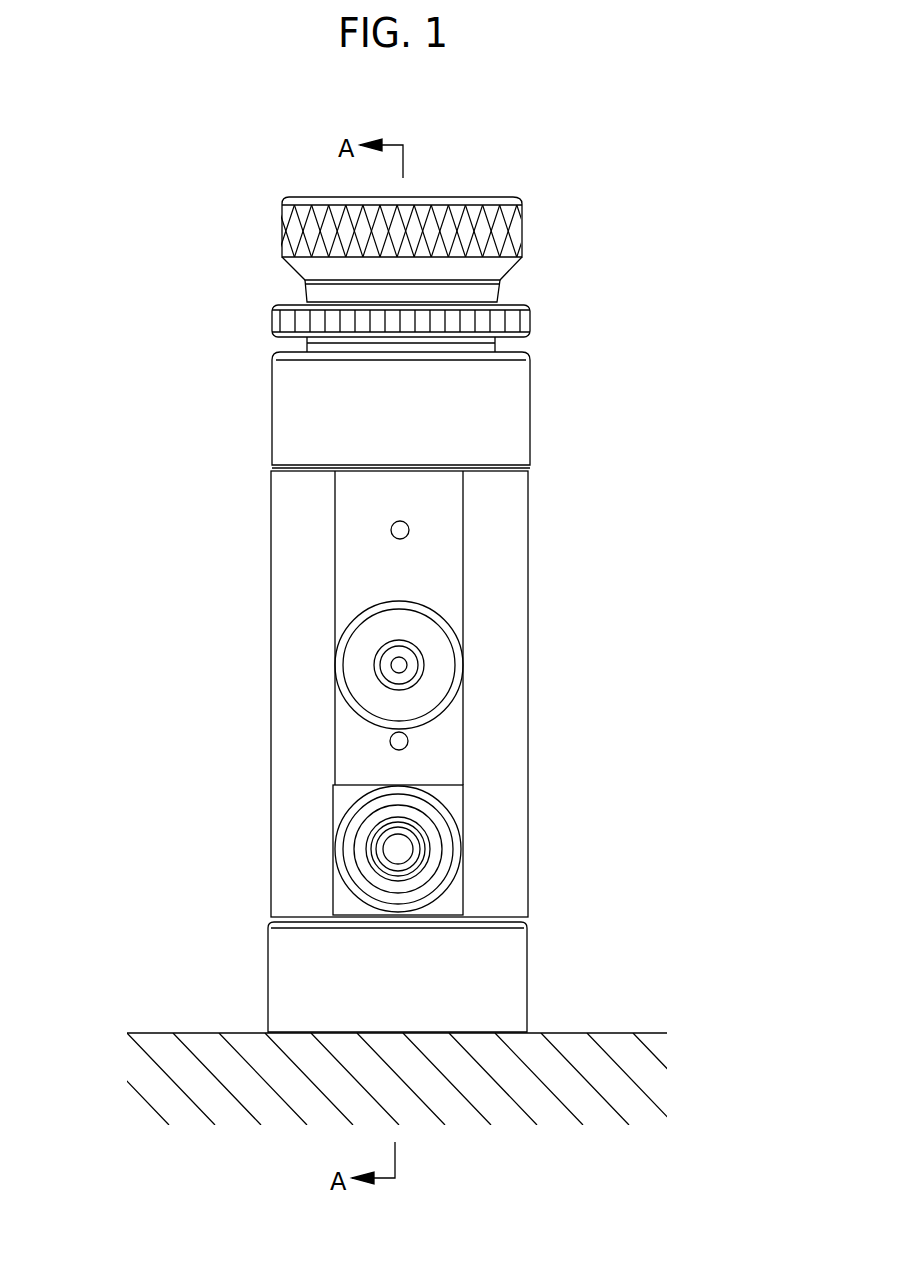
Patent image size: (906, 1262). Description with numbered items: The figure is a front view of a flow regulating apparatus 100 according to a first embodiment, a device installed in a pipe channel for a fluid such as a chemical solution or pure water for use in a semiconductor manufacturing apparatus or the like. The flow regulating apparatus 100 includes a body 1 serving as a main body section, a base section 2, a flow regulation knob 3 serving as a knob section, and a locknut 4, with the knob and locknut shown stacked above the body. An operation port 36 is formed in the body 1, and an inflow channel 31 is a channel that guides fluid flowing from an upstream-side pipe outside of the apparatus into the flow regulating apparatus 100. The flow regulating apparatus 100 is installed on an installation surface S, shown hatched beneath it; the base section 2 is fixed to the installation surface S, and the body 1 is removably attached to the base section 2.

The flow regulating apparatus 100 is at (613, 157).
The body 1 is at (530, 712).
The base section 2 is at (528, 970).
The flow regulation knob 3 is at (287, 231).
The locknut 4 is at (533, 322).
The inflow channel 31 is at (392, 850).
The operation port 36 is at (392, 665).
The installation surface S is at (424, 1079).